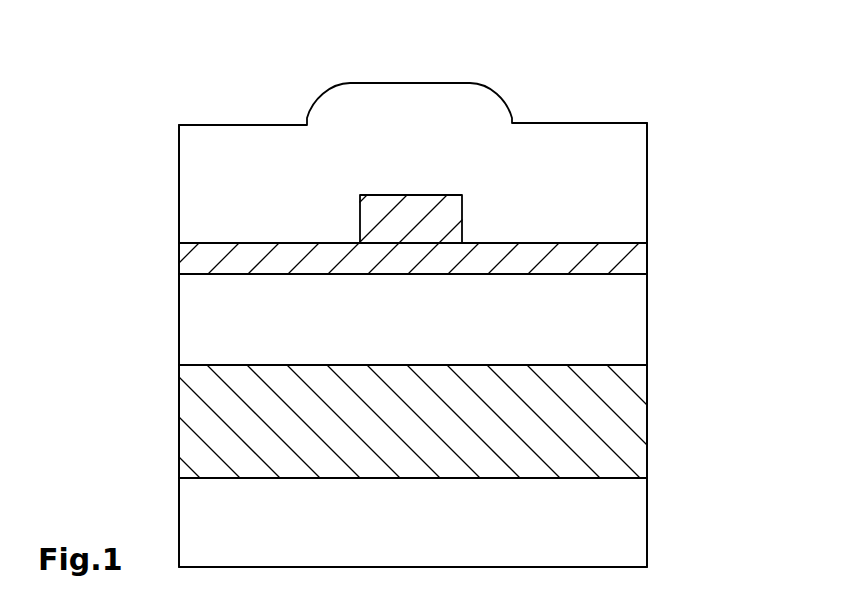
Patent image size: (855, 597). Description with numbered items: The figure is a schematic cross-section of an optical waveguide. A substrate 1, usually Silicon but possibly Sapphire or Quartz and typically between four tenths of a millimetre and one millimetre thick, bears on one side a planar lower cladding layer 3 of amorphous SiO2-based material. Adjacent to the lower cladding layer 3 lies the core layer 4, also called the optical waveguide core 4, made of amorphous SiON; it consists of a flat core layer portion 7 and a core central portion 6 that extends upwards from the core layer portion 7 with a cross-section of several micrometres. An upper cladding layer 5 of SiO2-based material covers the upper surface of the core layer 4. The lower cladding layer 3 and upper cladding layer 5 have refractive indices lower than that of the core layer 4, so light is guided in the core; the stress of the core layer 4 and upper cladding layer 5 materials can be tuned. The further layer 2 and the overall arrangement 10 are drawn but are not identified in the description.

The substrate 1 is at (632, 406).
The carrier layer 2 is at (632, 523).
The lower cladding layer 3 is at (628, 318).
The core layer 4 is at (628, 258).
The upper cladding layer 5 is at (628, 160).
The core central portion 6 is at (418, 205).
The core layer portion 7 is at (540, 250).
The layered device 10 is at (160, 298).